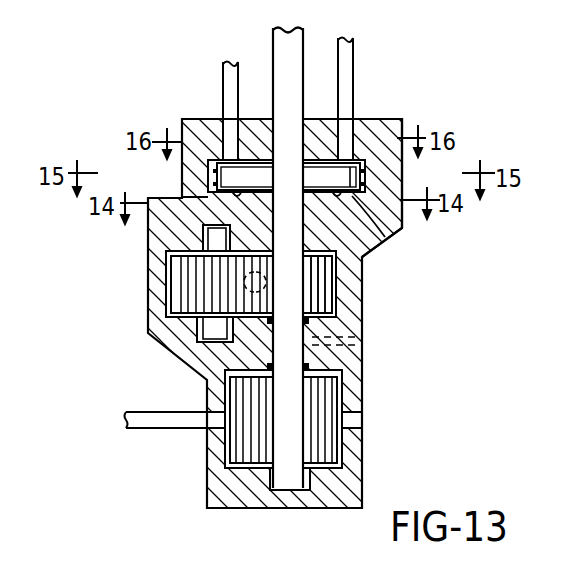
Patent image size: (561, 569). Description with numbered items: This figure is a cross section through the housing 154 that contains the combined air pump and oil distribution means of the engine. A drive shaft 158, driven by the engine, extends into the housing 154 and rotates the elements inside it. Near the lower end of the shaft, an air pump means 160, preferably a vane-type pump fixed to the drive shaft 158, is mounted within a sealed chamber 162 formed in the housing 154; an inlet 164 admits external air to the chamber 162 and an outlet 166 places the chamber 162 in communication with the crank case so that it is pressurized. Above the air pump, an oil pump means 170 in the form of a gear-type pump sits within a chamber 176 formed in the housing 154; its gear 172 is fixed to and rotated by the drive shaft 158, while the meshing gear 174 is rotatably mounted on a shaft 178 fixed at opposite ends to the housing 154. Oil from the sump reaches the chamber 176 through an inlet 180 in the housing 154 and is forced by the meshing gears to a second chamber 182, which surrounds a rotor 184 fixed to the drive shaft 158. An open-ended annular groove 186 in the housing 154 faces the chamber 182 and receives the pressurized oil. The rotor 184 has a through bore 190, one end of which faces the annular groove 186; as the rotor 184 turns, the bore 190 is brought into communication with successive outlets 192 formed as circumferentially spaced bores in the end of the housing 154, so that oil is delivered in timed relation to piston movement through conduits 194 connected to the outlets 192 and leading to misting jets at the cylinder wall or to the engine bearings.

The housing 154 is at (148, 316).
The drive shaft 158 is at (287, 48).
The air pump means 160 is at (260, 443).
The sealed chamber 162 is at (235, 438).
The inlet 164 is at (128, 410).
The outlet 166 is at (362, 419).
The oil pump means 170 is at (170, 273).
The gear 172 is at (326, 307).
The gear 174 is at (179, 286).
The chamber 176 is at (323, 279).
The shaft 178 is at (208, 337).
The inlet 180 is at (247, 294).
The second chamber 182 is at (212, 179).
The rotor 184 is at (340, 158).
The annular groove 186 is at (385, 237).
The through bore 190 is at (332, 175).
The outlets 192 is at (217, 130).
The conduits 194 is at (223, 83).